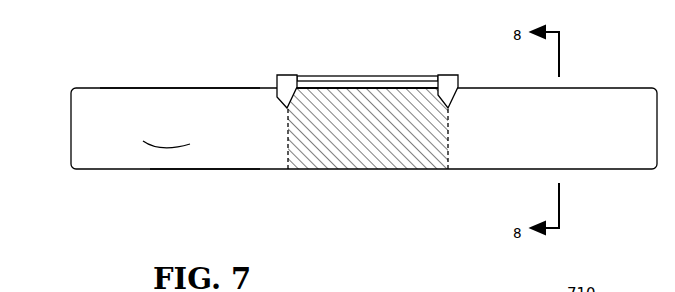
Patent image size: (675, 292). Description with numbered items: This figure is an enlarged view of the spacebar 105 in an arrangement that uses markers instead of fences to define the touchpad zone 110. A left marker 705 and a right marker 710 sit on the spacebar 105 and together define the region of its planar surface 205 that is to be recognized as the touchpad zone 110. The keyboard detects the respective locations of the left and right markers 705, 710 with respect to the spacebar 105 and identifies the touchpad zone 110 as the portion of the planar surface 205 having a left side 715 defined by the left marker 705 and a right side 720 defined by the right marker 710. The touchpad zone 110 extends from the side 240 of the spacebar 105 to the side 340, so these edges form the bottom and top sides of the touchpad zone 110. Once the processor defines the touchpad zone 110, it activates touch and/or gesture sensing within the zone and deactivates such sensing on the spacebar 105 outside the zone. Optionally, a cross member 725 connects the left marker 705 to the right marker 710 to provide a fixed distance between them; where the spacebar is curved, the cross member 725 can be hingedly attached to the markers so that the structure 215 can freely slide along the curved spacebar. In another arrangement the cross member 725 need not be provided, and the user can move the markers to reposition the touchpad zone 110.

The spacebar 105 is at (70, 102).
The touchpad zone 110 is at (362, 147).
The planar surface 205 is at (170, 144).
The structure 215 is at (268, 77).
The side of the spacebar 240 is at (195, 170).
The side of the spacebar 340 is at (145, 88).
The left marker 705 is at (290, 82).
The right marker 710 is at (445, 82).
The left side 715 is at (288, 132).
The right side 720 is at (448, 130).
The cross member 725 is at (363, 77).